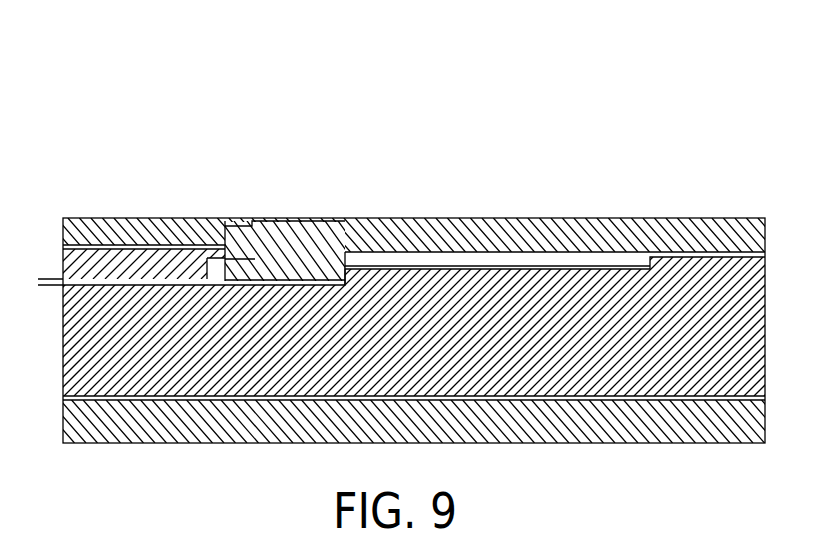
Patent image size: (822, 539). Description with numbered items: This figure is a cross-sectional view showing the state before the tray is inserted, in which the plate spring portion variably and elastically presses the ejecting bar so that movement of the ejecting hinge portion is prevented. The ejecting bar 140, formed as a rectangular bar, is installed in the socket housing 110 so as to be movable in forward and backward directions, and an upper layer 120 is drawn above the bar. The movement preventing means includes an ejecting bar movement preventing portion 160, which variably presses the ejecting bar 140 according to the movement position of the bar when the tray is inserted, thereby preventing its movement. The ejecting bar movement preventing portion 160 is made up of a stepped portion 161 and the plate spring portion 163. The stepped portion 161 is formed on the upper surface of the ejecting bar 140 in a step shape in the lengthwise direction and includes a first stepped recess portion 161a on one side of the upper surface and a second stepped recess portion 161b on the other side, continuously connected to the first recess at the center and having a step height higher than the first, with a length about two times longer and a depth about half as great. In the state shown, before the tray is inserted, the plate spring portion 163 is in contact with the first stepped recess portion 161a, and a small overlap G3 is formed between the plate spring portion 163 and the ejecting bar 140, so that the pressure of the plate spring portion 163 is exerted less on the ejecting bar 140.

The socket housing 110 is at (137, 443).
The upper layer 120 is at (535, 230).
The ejecting bar 140 is at (78, 361).
The ejecting bar movement preventing portion 160 is at (341, 157).
The ejecting bar movement preventing stepped portion 161 is at (341, 184).
The first stepped recess portion 161a is at (340, 280).
The second stepped recess portion 161b is at (428, 272).
The plate spring portion 163 is at (284, 219).
The small overlap G3 is at (38, 242).